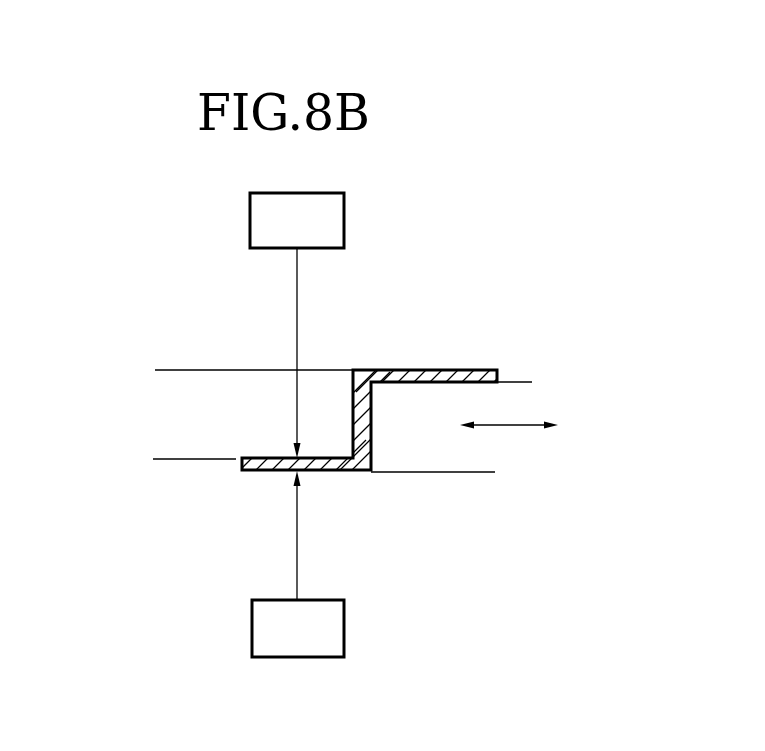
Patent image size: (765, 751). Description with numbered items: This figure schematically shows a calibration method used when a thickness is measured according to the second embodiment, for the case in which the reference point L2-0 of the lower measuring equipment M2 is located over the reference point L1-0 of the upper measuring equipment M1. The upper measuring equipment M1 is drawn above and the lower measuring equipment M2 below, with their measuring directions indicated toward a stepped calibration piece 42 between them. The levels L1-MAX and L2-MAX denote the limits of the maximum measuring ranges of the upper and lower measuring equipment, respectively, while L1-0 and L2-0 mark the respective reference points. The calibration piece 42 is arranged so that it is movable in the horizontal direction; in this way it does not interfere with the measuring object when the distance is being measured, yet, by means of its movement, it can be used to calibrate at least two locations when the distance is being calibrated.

The calibration piece 42 is at (404, 367).
The upper measuring equipment M1 is at (297, 325).
The lower measuring equipment M2 is at (298, 564).
The limit of maximum measuring range of upper measuring equipment L1-MAX is at (209, 367).
The reference point of upper measuring equipment L1-0 is at (169, 450).
The reference point of lower measuring equipment L2-0 is at (539, 382).
The limit of maximum measuring range of lower measuring equipment L2-MAX is at (470, 472).